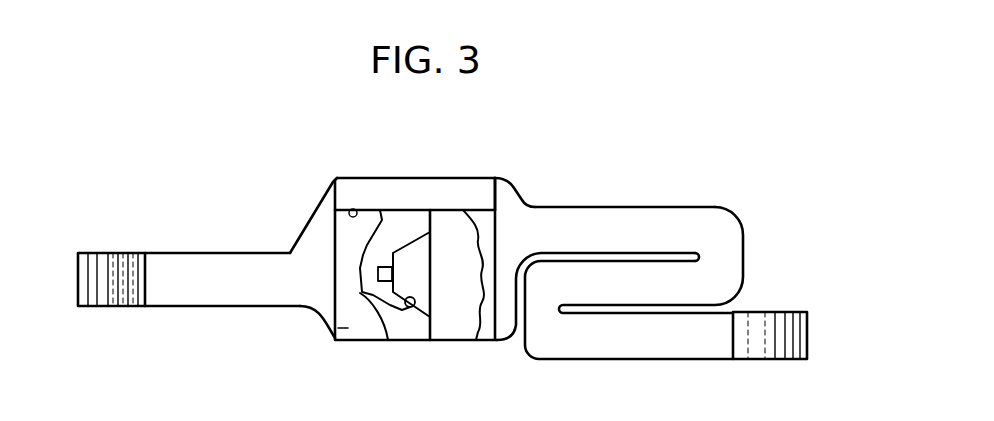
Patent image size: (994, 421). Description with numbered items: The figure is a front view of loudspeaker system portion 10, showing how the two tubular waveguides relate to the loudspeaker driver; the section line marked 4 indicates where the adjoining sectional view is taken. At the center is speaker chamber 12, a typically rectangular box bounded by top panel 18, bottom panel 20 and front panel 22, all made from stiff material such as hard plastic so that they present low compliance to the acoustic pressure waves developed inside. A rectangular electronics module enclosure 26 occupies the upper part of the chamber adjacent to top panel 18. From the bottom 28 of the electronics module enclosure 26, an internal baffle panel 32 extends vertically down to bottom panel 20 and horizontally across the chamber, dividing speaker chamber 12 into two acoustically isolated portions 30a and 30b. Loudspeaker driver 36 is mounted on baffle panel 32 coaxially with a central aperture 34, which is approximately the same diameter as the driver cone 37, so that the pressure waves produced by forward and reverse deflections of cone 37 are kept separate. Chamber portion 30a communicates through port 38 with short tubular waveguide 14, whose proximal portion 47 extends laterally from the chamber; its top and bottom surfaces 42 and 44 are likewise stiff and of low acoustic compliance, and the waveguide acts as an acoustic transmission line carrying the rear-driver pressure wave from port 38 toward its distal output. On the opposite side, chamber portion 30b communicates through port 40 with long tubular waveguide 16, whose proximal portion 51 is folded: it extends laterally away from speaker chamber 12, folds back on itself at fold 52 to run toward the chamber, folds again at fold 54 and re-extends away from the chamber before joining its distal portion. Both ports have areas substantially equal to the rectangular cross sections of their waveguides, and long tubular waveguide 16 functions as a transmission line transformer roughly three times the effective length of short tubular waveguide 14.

The section line 4- 4 is at (73, 128).
The loudspeaker system portion 10 is at (722, 188).
The speaker chamber 12 is at (325, 222).
The short tubular waveguide 14 is at (215, 267).
The long tubular waveguide 16 is at (623, 207).
The top panel 18 is at (460, 178).
The bottom panel 20 is at (480, 341).
The front panel 22 is at (335, 339).
The electronics module enclosure 26 is at (408, 193).
The bottom of electronics module enclosure 28 is at (352, 209).
The speaker chamber portion 30a is at (383, 342).
The speaker chamber portion 30b is at (448, 328).
The internal baffle panel 32 is at (432, 228).
The central aperture 34 is at (432, 290).
The loudspeaker driver 36 is at (367, 262).
The loudspeaker driver cone 37 is at (362, 293).
The speaker chamber port 38 is at (287, 270).
The speaker chamber port 40 is at (537, 200).
The top surface 42 is at (162, 253).
The bottom surface 44 is at (203, 308).
The proximal portion 47 is at (303, 193).
The proximal portion 51 is at (755, 145).
The fold 52 is at (736, 250).
The fold 54 is at (538, 353).